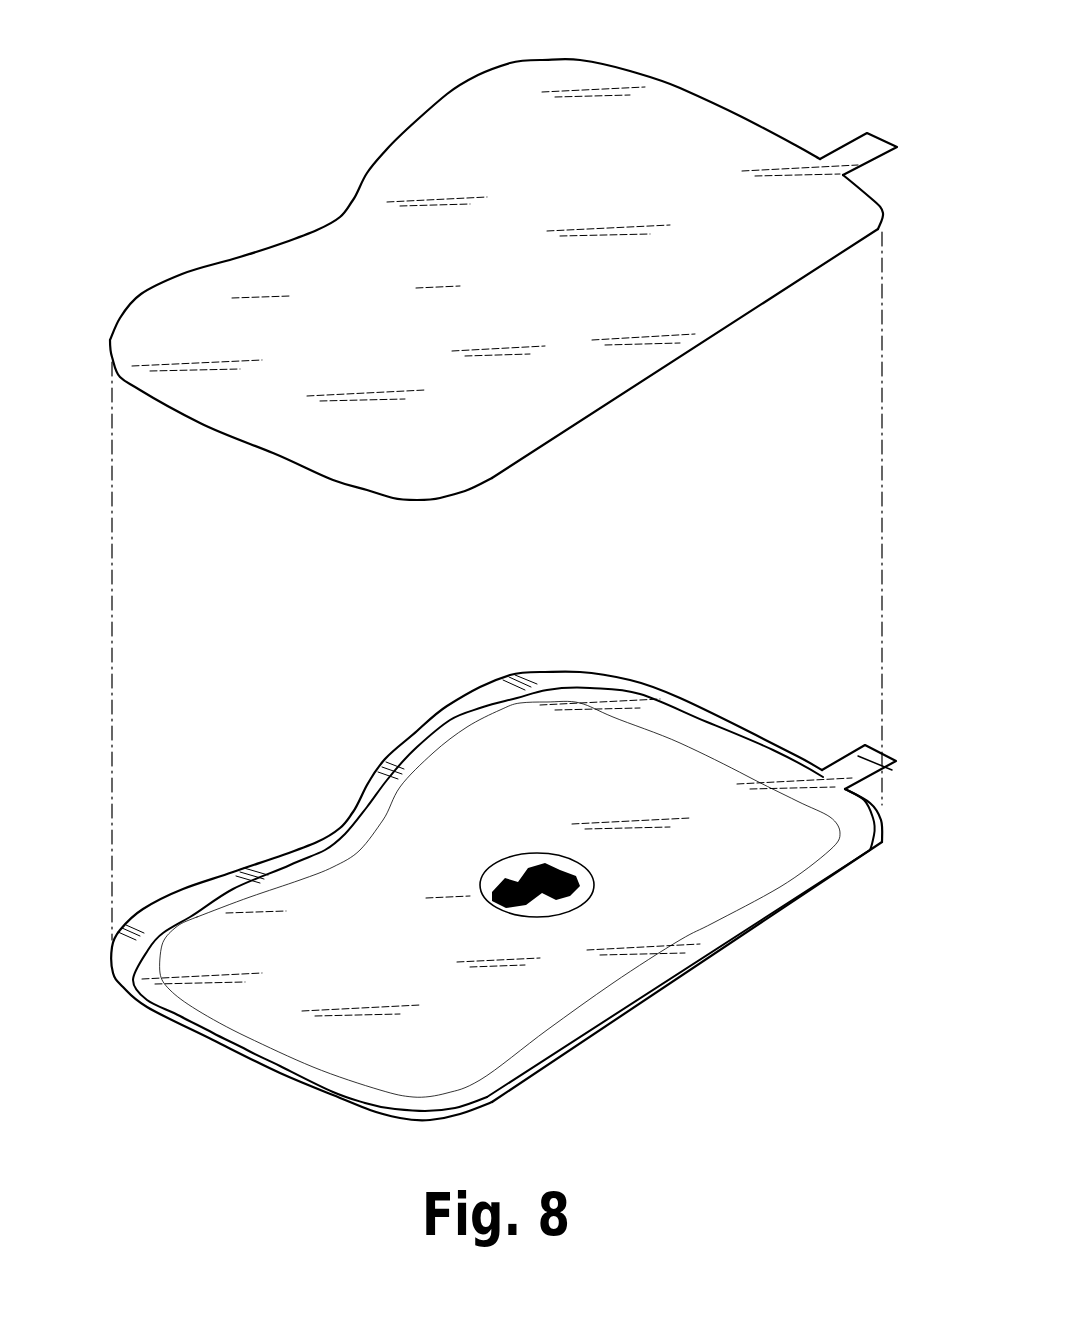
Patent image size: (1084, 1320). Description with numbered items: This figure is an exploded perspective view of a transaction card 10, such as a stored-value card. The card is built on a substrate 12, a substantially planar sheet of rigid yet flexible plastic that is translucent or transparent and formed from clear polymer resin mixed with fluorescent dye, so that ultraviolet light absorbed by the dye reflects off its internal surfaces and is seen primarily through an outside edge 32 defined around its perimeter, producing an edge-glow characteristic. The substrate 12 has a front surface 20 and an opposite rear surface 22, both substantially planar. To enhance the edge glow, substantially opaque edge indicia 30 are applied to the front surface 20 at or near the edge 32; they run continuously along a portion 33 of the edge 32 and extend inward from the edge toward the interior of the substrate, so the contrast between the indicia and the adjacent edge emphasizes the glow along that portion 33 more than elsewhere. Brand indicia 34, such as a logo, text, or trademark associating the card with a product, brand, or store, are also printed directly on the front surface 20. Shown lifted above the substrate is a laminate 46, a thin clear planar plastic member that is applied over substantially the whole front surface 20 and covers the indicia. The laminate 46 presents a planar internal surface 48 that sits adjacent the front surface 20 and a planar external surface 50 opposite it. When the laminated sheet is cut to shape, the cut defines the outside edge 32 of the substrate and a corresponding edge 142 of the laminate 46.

The transaction card 10 is at (250, 96).
The substrate 12 is at (767, 740).
The front surface 20 is at (848, 838).
The rear surface 22 is at (748, 934).
The edge indicia 30 is at (568, 682).
The outside edge 32 is at (133, 1001).
The portion of edge 33 is at (168, 897).
The brand indicia 34 is at (558, 915).
The laminate 46 is at (713, 128).
The internal surface 48 is at (745, 318).
The external surface 50 is at (591, 76).
The edge of laminate 142 is at (276, 453).